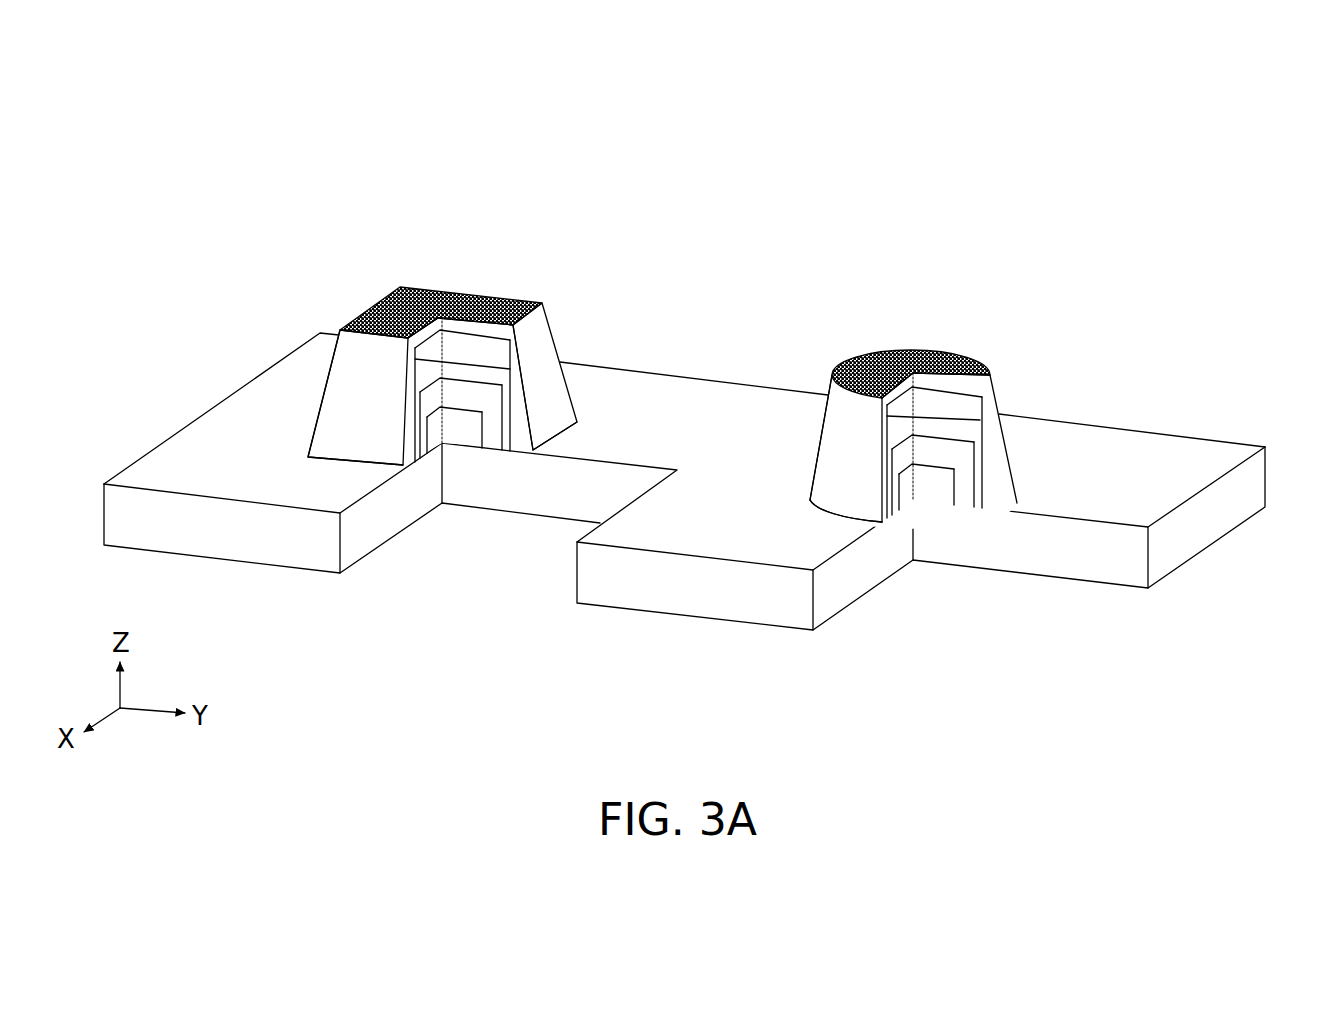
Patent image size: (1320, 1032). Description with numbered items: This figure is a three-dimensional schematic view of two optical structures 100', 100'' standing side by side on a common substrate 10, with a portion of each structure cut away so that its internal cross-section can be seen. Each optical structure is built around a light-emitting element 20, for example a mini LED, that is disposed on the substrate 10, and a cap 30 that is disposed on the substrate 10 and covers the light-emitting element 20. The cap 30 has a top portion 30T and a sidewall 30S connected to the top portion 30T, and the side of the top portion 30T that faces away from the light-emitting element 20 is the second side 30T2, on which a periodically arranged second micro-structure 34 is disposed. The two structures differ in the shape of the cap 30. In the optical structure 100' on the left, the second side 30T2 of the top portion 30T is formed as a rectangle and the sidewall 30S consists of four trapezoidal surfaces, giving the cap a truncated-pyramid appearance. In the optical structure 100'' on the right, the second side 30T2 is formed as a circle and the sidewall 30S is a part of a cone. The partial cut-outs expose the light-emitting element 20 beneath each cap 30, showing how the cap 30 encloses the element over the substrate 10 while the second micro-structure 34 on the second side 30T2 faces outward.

The substrate 10 is at (1197, 530).
The light-emitting element 20 is at (460, 410).
The cap 30 is at (1220, 112).
The sidewall 30S is at (345, 393).
The top portion 30T is at (388, 310).
The second side 30T2 is at (417, 297).
The second micro-structure 34 is at (502, 290).
The optical structure 100' is at (442, 308).
The optical structure 100'' is at (913, 365).